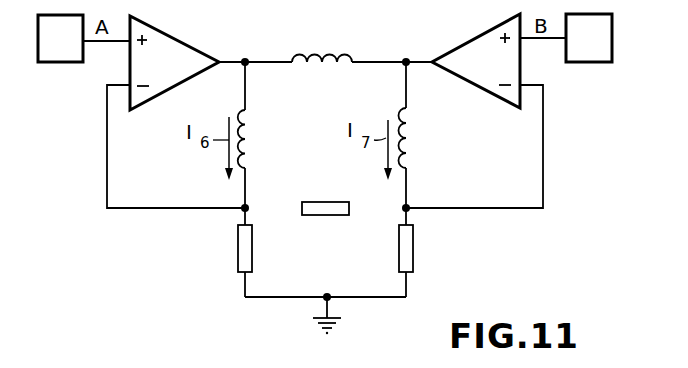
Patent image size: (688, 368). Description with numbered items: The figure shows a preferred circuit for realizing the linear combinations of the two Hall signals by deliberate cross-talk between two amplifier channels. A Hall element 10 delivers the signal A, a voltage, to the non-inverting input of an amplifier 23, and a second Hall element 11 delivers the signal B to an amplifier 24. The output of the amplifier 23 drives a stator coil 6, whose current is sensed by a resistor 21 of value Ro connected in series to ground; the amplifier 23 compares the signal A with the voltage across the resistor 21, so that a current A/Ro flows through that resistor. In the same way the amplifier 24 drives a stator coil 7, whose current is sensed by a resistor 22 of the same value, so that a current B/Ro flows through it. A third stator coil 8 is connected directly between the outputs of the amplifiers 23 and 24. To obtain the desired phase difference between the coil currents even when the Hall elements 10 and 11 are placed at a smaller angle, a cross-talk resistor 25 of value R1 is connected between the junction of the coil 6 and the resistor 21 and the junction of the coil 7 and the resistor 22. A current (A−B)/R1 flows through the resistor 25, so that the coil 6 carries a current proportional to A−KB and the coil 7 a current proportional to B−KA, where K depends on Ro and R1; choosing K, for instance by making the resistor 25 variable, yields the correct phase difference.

The Hall element 10 is at (62, 64).
The Hall element 11 is at (590, 64).
The amplifier 23 is at (180, 40).
The amplifier 24 is at (462, 43).
The third stator coil 8 is at (326, 55).
The stator coil 6 is at (250, 141).
The stator coil 7 is at (410, 135).
The cross-talk resistor 25 is at (322, 201).
The resistor 21 is at (254, 250).
The resistor 22 is at (415, 250).